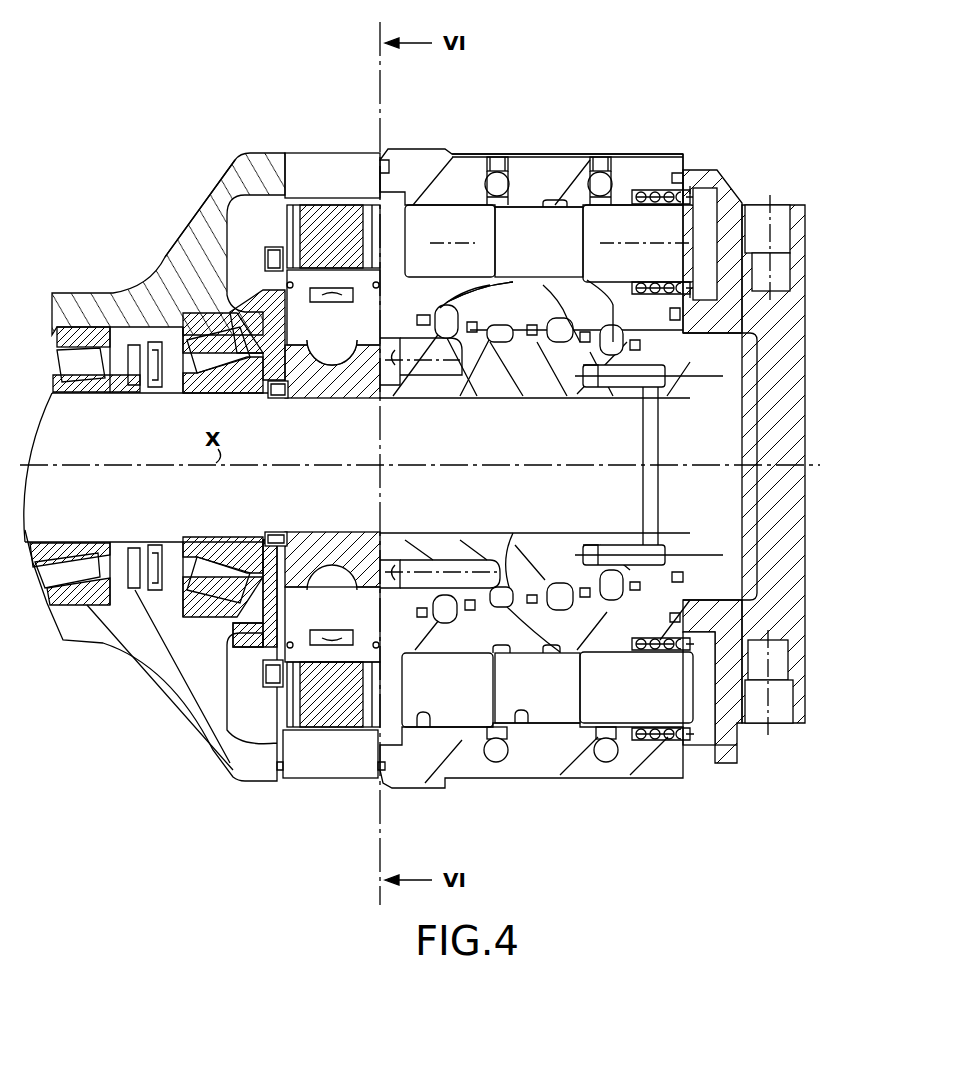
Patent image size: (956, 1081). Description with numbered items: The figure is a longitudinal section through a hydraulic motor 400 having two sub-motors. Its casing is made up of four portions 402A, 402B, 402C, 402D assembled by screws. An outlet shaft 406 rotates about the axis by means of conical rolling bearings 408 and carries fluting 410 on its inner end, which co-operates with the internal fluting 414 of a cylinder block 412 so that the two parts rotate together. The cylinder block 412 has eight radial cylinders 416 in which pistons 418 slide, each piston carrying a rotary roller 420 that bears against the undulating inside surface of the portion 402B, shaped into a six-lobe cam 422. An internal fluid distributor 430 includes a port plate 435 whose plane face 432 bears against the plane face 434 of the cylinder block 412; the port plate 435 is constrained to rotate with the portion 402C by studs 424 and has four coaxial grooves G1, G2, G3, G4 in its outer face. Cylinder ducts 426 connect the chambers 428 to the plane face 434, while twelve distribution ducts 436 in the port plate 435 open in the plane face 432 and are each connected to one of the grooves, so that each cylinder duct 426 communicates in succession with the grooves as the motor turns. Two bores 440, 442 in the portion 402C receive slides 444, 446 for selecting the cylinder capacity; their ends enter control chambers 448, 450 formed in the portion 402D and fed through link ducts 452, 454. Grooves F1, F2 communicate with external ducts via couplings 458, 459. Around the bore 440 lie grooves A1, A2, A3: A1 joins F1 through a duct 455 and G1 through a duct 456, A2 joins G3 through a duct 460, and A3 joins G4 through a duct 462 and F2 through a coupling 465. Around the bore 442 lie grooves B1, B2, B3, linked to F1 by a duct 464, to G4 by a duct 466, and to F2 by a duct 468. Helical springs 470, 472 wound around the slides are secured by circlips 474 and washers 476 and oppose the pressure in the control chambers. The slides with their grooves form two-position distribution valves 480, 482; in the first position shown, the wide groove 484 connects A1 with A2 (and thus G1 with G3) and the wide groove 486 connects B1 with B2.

The hydraulic motor 400 is at (124, 185).
The casing portion 402A is at (98, 300).
The casing portion 402B is at (326, 165).
The casing portion 402C is at (683, 160).
The casing portion 402D is at (805, 267).
The outlet shaft 406 is at (92, 512).
The conical rolling bearings 408 is at (208, 395).
The fluting 410 is at (310, 398).
The cylinder block 412 is at (305, 535).
The internal fluting 414 is at (362, 399).
The cylinders 416 is at (345, 585).
The pistons 418 is at (352, 617).
The rotary roller 420 is at (330, 742).
The cam 422 is at (342, 215).
The studs 424 is at (665, 380).
The cylinder ducts 426 is at (366, 356).
The chambers 428 is at (318, 346).
The internal fluid distributor 430 is at (683, 56).
The plane face 432 is at (392, 555).
The plane face 434 is at (403, 388).
The port plate 435 is at (545, 540).
The distribution ducts 436 is at (470, 398).
The bore 440 is at (437, 203).
The bore 442 is at (421, 728).
The slide 444 is at (650, 286).
The slide 446 is at (478, 713).
The control chamber 448 is at (712, 205).
The control chamber 450 is at (702, 735).
The link duct 452 is at (777, 240).
The link duct 454 is at (778, 665).
The duct 455 is at (488, 190).
The duct 456 is at (465, 302).
The coupling 458 is at (496, 157).
The coupling 459 is at (607, 162).
The duct 460 is at (523, 300).
The duct 462 is at (660, 337).
The duct 464 is at (487, 740).
The coupling 465 is at (634, 190).
The duct 466 is at (515, 598).
The duct 468 is at (593, 740).
The helical spring 470 is at (652, 204).
The helical spring 472 is at (662, 650).
The circlip 474 is at (800, 350).
The washer 476 is at (707, 197).
The distribution valve 480 is at (535, 95).
The distribution valve 482 is at (650, 799).
The wide groove 484 is at (528, 206).
The wide groove 486 is at (523, 725).
The groove F1 is at (488, 178).
The groove F2 is at (596, 180).
The groove A1 is at (497, 292).
The groove A2 is at (552, 292).
The groove A3 is at (608, 295).
The groove G1 is at (447, 305).
The groove G2 is at (630, 368).
The groove G3 is at (551, 373).
The groove G4 is at (498, 375).
The groove B1 is at (490, 648).
The groove B2 is at (550, 652).
The groove B3 is at (603, 645).